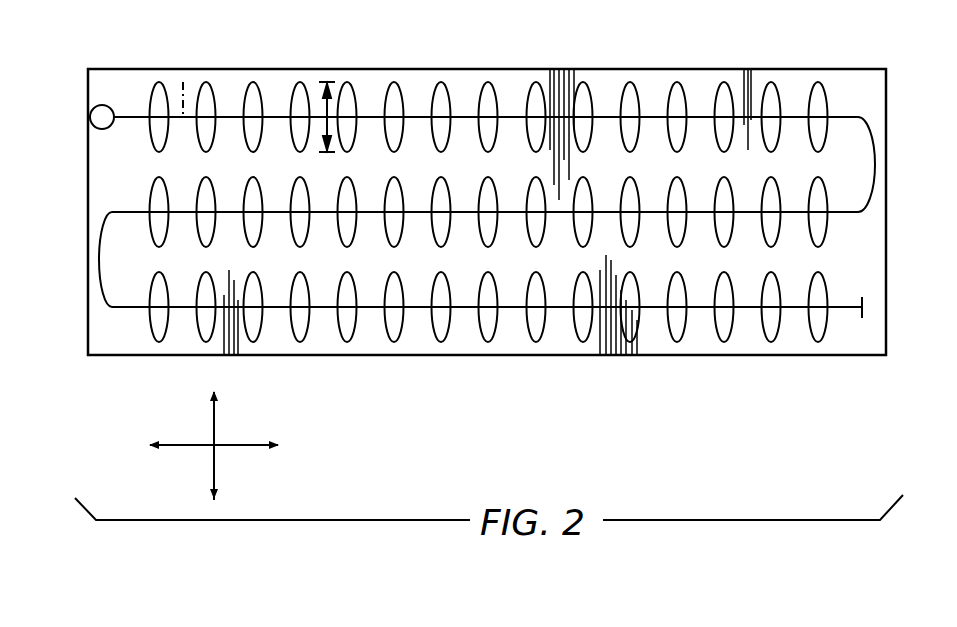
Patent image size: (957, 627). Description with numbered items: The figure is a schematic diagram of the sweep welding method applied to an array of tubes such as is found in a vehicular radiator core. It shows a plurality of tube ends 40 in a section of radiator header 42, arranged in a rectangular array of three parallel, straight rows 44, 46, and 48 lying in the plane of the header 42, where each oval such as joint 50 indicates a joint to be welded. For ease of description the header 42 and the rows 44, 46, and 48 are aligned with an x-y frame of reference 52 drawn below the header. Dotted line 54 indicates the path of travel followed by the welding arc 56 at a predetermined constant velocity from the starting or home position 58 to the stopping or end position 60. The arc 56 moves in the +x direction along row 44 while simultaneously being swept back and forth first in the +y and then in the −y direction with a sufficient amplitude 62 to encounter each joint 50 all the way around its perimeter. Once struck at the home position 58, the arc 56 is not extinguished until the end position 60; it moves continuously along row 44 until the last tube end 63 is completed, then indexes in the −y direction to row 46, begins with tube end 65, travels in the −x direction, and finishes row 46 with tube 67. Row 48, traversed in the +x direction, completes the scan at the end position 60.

The tube ends 40 is at (536, 88).
The radiator header 42 is at (870, 97).
The first row of tube ends 44 is at (146, 139).
The second row of tube ends 46 is at (146, 178).
The third row of tube ends 48 is at (146, 330).
The joint 50 is at (305, 179).
The x-y frame of reference 52 is at (220, 450).
The dotted line (path of travel) 54 is at (183, 80).
The welding arc 56 is at (105, 108).
The starting or home position 58 is at (80, 108).
The stopping or end position 60 is at (866, 300).
The amplitude 62 is at (330, 99).
The last tube end 63 is at (812, 90).
The tube end 65 is at (817, 193).
The tube 67 is at (158, 186).